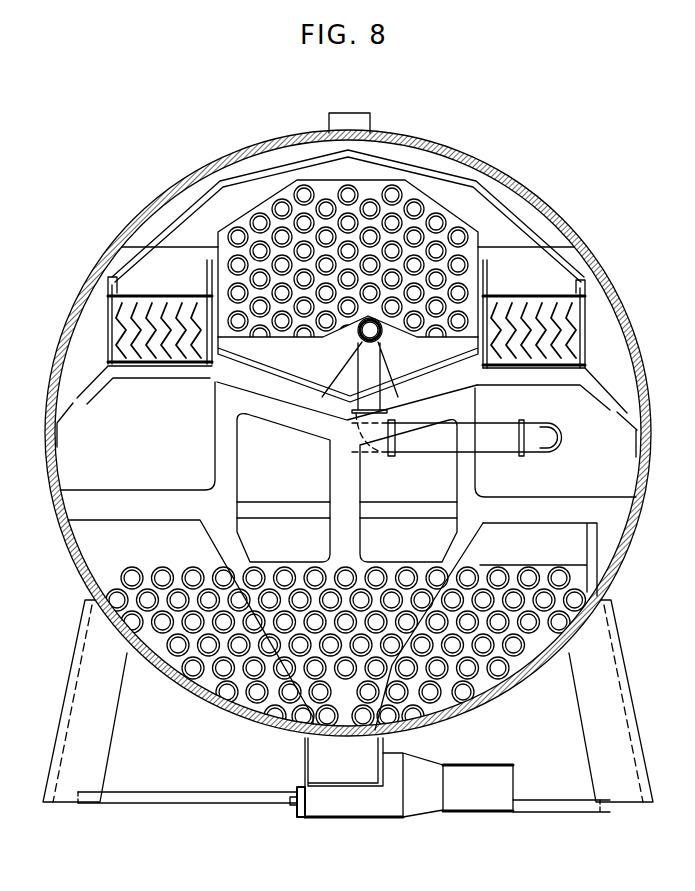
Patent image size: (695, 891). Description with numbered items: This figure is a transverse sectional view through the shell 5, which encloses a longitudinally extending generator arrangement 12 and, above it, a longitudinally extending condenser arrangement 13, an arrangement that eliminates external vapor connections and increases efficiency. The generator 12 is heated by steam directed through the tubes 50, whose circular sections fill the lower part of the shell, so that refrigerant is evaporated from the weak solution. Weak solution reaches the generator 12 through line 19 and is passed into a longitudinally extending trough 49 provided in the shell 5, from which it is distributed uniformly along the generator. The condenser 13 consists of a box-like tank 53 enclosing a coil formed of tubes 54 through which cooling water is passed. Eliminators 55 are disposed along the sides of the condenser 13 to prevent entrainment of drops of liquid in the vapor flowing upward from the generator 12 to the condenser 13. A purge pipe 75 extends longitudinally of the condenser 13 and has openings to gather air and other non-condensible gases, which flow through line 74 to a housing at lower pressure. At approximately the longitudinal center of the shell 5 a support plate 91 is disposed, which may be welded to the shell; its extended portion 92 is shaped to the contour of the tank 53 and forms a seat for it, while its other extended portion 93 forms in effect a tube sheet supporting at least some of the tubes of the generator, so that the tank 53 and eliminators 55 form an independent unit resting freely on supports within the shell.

The shell 5 is at (544, 215).
The generator arrangement 12 is at (507, 698).
The condenser arrangement 13 is at (254, 217).
The line 19 is at (478, 795).
The trough 49 is at (322, 765).
The tubes 50 is at (526, 574).
The condenser tank 53 is at (348, 369).
The tubes 54 is at (446, 226).
The eliminators 55 is at (510, 312).
The line 74 is at (509, 438).
The purge pipe 75 is at (381, 338).
The support plate 91 is at (214, 407).
The extended portion 92 is at (313, 421).
The extended portion 93 is at (322, 706).